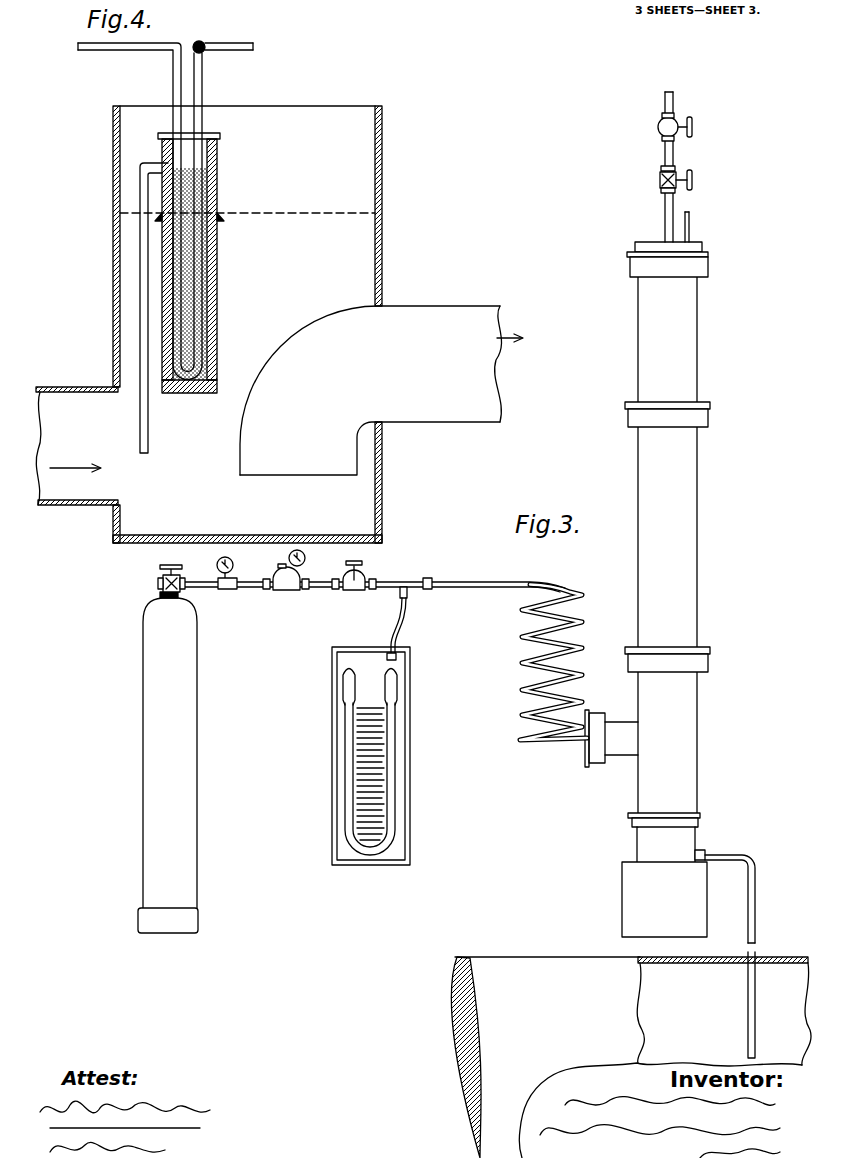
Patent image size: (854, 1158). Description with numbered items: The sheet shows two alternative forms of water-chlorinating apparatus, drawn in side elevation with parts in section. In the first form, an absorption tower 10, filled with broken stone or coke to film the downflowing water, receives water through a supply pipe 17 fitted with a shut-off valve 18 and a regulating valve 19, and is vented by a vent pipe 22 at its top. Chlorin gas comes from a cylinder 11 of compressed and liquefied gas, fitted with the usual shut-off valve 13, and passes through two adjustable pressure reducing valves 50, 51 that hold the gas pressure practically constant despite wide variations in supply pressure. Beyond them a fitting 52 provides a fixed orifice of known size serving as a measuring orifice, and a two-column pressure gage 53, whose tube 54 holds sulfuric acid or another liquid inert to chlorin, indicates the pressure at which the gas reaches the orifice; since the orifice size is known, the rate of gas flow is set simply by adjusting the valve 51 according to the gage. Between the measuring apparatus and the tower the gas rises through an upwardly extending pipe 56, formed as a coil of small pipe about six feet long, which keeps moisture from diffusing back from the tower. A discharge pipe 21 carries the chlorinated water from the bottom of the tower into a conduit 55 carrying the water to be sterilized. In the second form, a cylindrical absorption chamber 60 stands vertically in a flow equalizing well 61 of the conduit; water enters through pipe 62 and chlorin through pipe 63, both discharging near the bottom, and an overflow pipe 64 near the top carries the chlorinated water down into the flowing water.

In FIG. 3, the absorption tower 10 is at (685, 480).
In FIG. 3, the cylinder 11 is at (200, 742).
In FIG. 3, the shut-off valve 13 is at (163, 582).
In FIG. 3, the supply pipe 17 is at (665, 153).
In FIG. 3, the shut-off valve 18 is at (663, 122).
In FIG. 3, the regulating valve 19 is at (660, 180).
In FIG. 3, the discharge pipe 21 is at (742, 852).
In FIG. 3, the vent pipe 22 is at (690, 222).
In FIG. 3, the pressure reducing valve 50 is at (283, 592).
In FIG. 3, the pressure reducing valve 51 is at (352, 592).
In FIG. 3, the fitting 52 is at (428, 580).
In FIG. 3, the pressure gage 53 is at (386, 756).
In FIG. 3, the tube 54 is at (392, 722).
In FIG. 3, the conduit 55 is at (631, 1057).
In FIG. 3, the upwardly extending pipe 56 is at (527, 690).
In FIG. 4, the absorption chamber 60 is at (215, 185).
In FIG. 4, the flow equalizing well 61 is at (383, 172).
In FIG. 4, the pipe 62 is at (240, 50).
In FIG. 4, the pipe 63 is at (128, 50).
In FIG. 4, the overflow pipe 64 is at (150, 160).